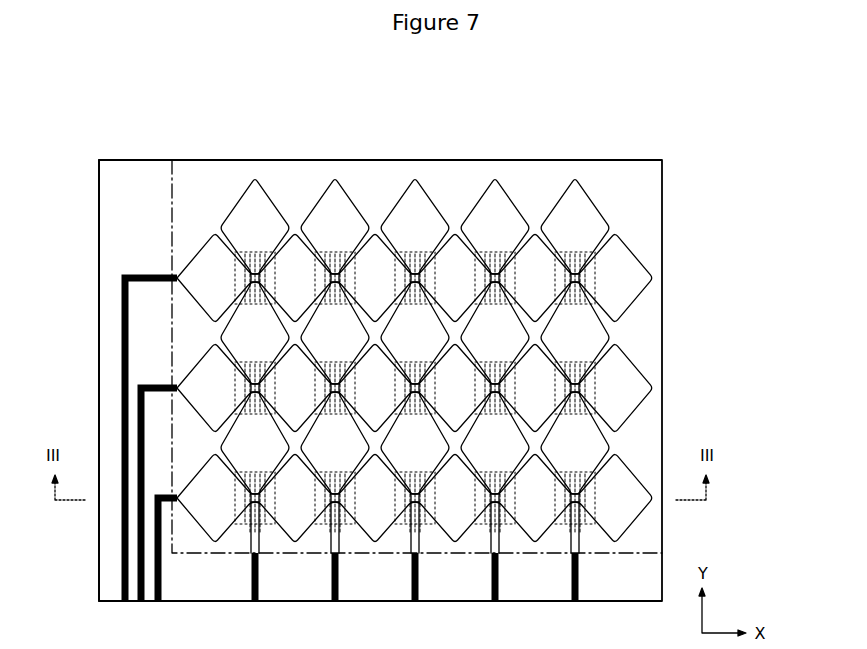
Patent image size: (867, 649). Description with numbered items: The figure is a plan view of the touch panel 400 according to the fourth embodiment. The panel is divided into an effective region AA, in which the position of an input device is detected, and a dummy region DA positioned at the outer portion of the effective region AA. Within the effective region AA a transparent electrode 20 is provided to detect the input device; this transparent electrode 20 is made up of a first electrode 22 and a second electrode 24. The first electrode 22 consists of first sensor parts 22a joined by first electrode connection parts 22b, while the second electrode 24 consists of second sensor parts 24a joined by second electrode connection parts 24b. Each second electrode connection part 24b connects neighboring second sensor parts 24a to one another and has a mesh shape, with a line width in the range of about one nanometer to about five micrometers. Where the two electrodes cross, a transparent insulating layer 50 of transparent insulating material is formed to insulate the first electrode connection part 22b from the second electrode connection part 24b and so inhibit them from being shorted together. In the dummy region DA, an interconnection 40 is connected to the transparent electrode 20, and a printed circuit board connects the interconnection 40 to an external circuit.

The touch panel 400 is at (136, 75).
The transparent electrode 20 is at (478, 323).
The first electrode 22 is at (462, 332).
The first sensor part 22a is at (630, 272).
The first electrode connection part 22b is at (593, 300).
The second electrode 24 is at (481, 323).
The second sensor part 24a is at (572, 195).
The second electrode connection part 24b is at (575, 242).
The interconnection 40 is at (121, 362).
The transparent insulating layer 50 is at (622, 238).
The effective region AA is at (232, 183).
The dummy region DA is at (112, 208).